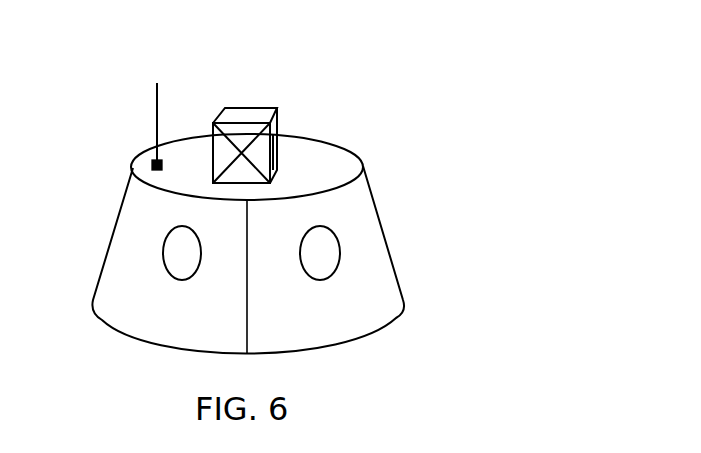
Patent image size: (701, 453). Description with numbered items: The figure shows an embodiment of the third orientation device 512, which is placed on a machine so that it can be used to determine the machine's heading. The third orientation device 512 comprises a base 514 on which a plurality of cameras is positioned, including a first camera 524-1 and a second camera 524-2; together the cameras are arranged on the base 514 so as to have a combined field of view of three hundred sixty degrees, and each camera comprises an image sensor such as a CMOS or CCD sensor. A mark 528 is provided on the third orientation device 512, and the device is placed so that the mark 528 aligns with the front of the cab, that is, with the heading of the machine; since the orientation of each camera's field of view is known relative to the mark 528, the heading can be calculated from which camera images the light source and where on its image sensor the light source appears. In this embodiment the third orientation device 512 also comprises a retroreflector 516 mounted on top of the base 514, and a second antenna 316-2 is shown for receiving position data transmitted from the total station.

The third orientation device 512 is at (506, 72).
The base 514 is at (315, 157).
The retroreflector 516 is at (258, 111).
The mark 528 is at (180, 209).
The first camera 524-1 is at (175, 268).
The second camera 524-2 is at (320, 270).
The second antenna 316-2 is at (157, 123).